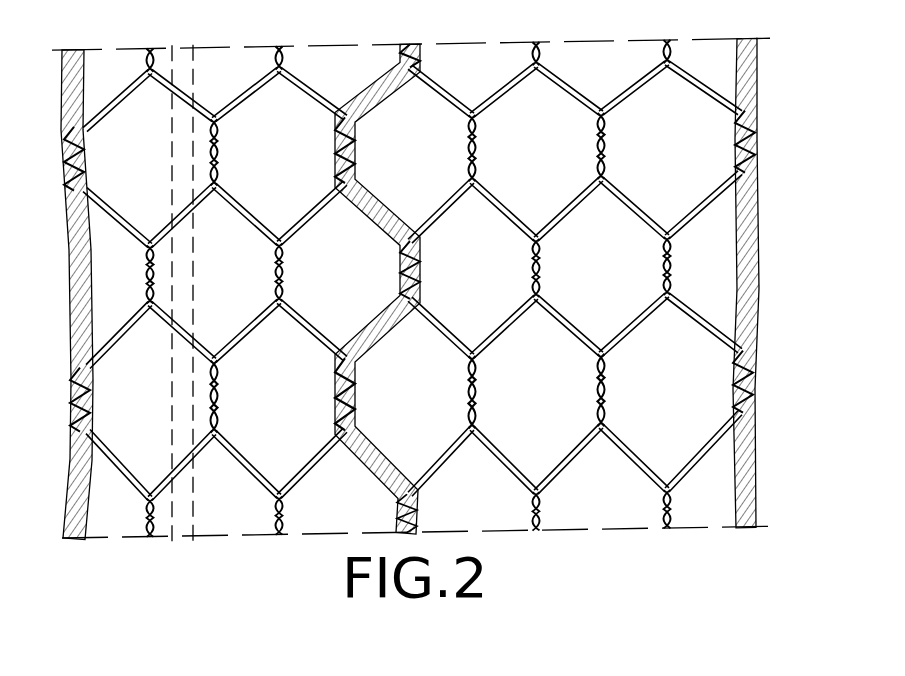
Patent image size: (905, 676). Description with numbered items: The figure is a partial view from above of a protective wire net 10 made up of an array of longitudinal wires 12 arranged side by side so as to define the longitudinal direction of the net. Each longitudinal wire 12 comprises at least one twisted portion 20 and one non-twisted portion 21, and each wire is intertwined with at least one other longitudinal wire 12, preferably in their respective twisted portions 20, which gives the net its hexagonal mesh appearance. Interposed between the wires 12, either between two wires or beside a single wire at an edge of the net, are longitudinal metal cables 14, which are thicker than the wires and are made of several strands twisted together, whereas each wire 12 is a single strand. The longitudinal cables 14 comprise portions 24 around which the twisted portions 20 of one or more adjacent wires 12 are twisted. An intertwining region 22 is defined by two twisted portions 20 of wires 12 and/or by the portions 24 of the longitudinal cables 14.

The protective wire net 10 is at (436, 327).
The longitudinal wire 12 is at (442, 288).
The longitudinal metal cable 14 is at (92, 268).
The twisted portion 20 is at (95, 158).
The non-twisted portion 21 is at (435, 215).
The intertwining region 22 is at (548, 265).
The portion of longitudinal cable 24 is at (95, 174).